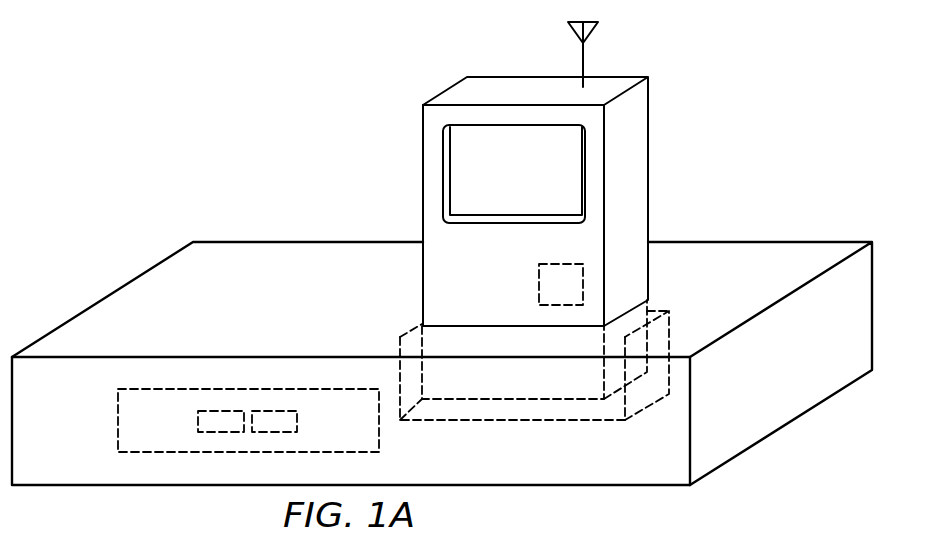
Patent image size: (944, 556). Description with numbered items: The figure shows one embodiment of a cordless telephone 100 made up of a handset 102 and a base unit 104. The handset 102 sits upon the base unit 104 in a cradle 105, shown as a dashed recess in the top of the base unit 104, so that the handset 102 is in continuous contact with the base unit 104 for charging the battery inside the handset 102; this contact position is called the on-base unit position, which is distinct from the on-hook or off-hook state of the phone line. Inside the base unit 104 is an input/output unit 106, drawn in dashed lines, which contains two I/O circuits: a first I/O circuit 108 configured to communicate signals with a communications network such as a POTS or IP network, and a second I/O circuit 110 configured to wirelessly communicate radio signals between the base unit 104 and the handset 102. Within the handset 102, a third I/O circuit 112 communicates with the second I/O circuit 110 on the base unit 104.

The cordless telephone 100 is at (188, 121).
The handset 102 is at (423, 162).
The base unit 104 is at (265, 251).
The cradle 105 is at (511, 421).
The input/output (I/O) unit 106 is at (118, 420).
The first I/O circuit 108 is at (199, 417).
The second I/O circuit 110 is at (297, 418).
The third I/O circuit 112 is at (538, 285).